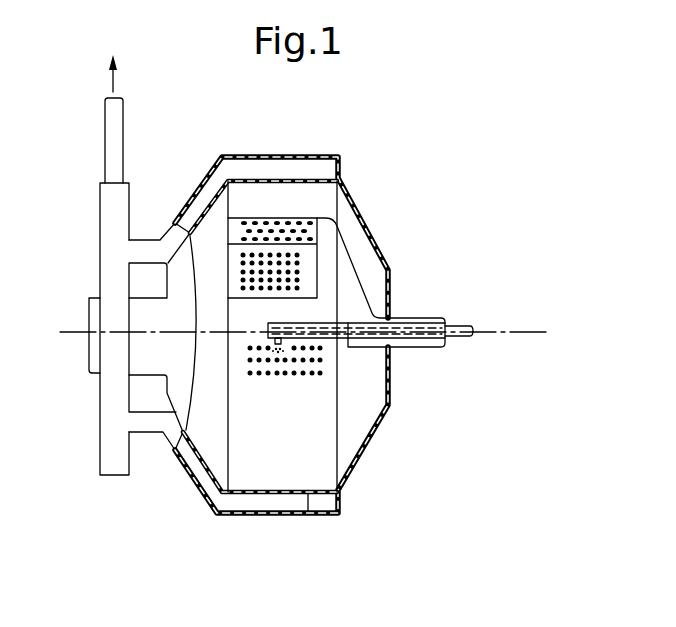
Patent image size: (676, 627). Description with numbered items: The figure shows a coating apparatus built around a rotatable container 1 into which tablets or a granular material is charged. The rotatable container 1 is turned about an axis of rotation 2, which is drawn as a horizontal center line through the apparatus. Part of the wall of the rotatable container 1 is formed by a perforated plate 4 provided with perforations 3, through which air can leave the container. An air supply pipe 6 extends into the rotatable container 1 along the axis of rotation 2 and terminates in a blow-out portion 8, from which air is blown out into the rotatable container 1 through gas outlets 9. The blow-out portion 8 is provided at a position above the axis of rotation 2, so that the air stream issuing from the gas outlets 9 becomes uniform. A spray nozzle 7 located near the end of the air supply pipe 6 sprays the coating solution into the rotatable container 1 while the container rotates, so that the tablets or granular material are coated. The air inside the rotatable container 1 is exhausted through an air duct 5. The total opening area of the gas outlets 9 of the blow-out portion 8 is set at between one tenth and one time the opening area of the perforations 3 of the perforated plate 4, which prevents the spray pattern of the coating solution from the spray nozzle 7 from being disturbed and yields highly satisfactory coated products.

The rotatable container 1 is at (377, 227).
The axis of rotation 2 is at (518, 330).
The perforations 3 is at (298, 372).
The perforated plate 4 is at (328, 190).
The air duct 5 is at (292, 156).
The air supply pipe 6 is at (430, 317).
The spray nozzle 7 is at (275, 323).
The blow-out portion 8 is at (270, 240).
The gas outlets 9 is at (243, 250).